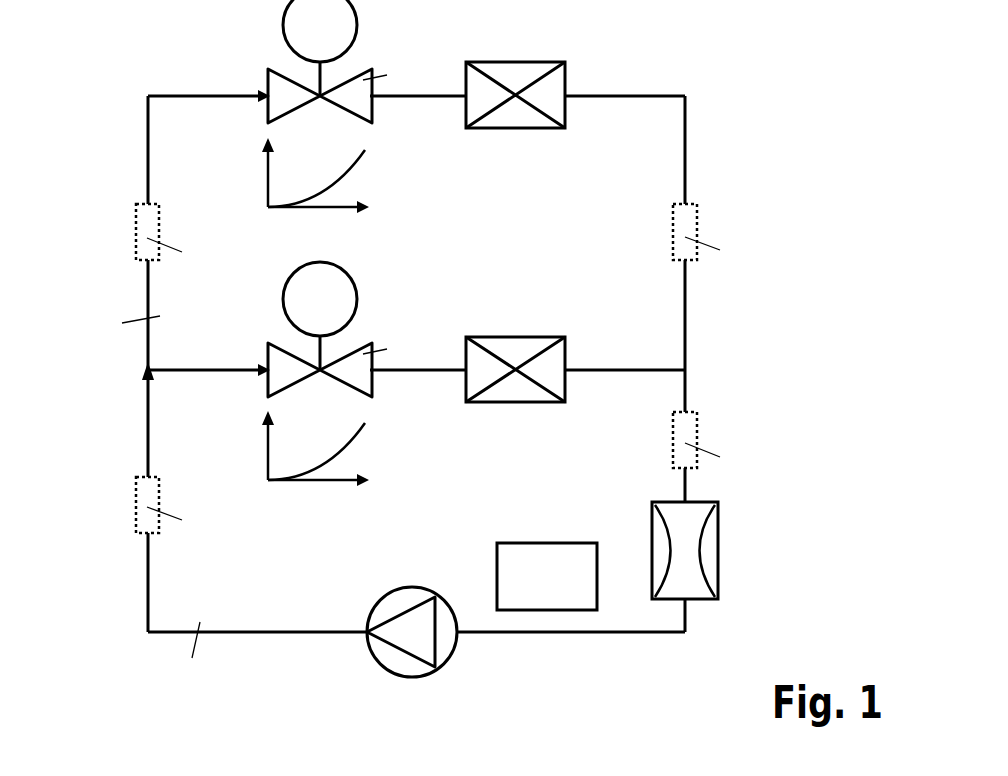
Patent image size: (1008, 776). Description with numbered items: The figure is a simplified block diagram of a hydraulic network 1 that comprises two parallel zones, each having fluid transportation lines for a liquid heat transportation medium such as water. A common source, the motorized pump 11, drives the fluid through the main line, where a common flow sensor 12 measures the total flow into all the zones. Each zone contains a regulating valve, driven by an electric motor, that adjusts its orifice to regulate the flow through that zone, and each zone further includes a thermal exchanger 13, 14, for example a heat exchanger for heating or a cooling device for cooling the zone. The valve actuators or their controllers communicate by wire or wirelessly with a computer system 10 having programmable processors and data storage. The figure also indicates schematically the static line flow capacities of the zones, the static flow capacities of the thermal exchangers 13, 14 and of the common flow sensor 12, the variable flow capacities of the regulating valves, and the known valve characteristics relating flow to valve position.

The hydraulic network 1 is at (72, 609).
The computer system 10 is at (548, 553).
The motorized pump 11 is at (388, 665).
The common flow sensor 12 is at (697, 587).
The thermal exchanger 13 is at (538, 393).
The thermal exchanger 14 is at (537, 122).